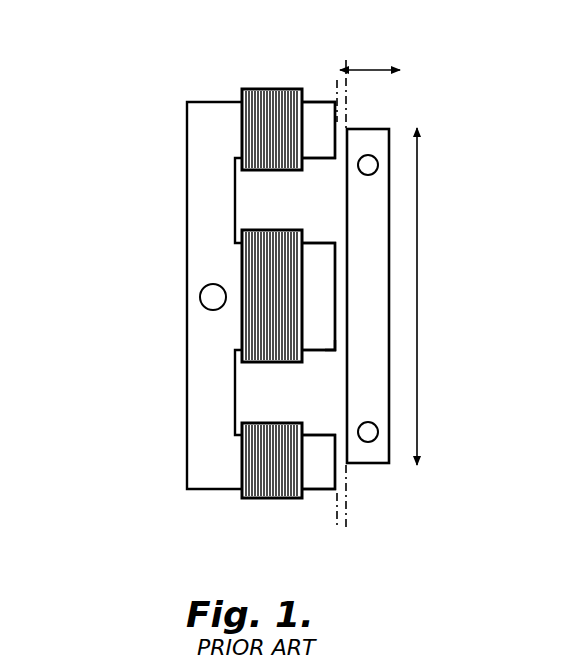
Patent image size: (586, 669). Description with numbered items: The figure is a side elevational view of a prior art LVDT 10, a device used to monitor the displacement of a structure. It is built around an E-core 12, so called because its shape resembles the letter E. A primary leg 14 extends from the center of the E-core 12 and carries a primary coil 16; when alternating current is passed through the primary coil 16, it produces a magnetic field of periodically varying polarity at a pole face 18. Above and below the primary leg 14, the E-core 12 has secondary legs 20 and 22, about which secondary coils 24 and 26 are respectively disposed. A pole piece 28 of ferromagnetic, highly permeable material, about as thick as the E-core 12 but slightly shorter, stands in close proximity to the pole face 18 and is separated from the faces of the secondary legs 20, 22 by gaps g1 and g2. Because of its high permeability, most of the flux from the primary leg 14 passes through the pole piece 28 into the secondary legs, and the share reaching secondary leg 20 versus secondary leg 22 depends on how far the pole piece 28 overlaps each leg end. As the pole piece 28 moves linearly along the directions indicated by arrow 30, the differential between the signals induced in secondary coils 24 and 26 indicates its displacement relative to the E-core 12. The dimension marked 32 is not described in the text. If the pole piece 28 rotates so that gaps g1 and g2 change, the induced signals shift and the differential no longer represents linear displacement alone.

The LVDT 10 is at (150, 437).
The E-core 12 is at (187, 342).
The primary leg 14 is at (313, 258).
The primary coil 16 is at (268, 230).
The pole face 18 is at (338, 340).
The secondary leg 20 is at (322, 105).
The secondary leg 22 is at (316, 483).
The secondary coil 24 is at (252, 90).
The secondary coil 26 is at (262, 500).
The pole piece 28 is at (402, 97).
The arrow 30 is at (418, 232).
The armature travel 32 is at (370, 70).
The gap g1 is at (337, 80).
The gap g2 is at (340, 514).